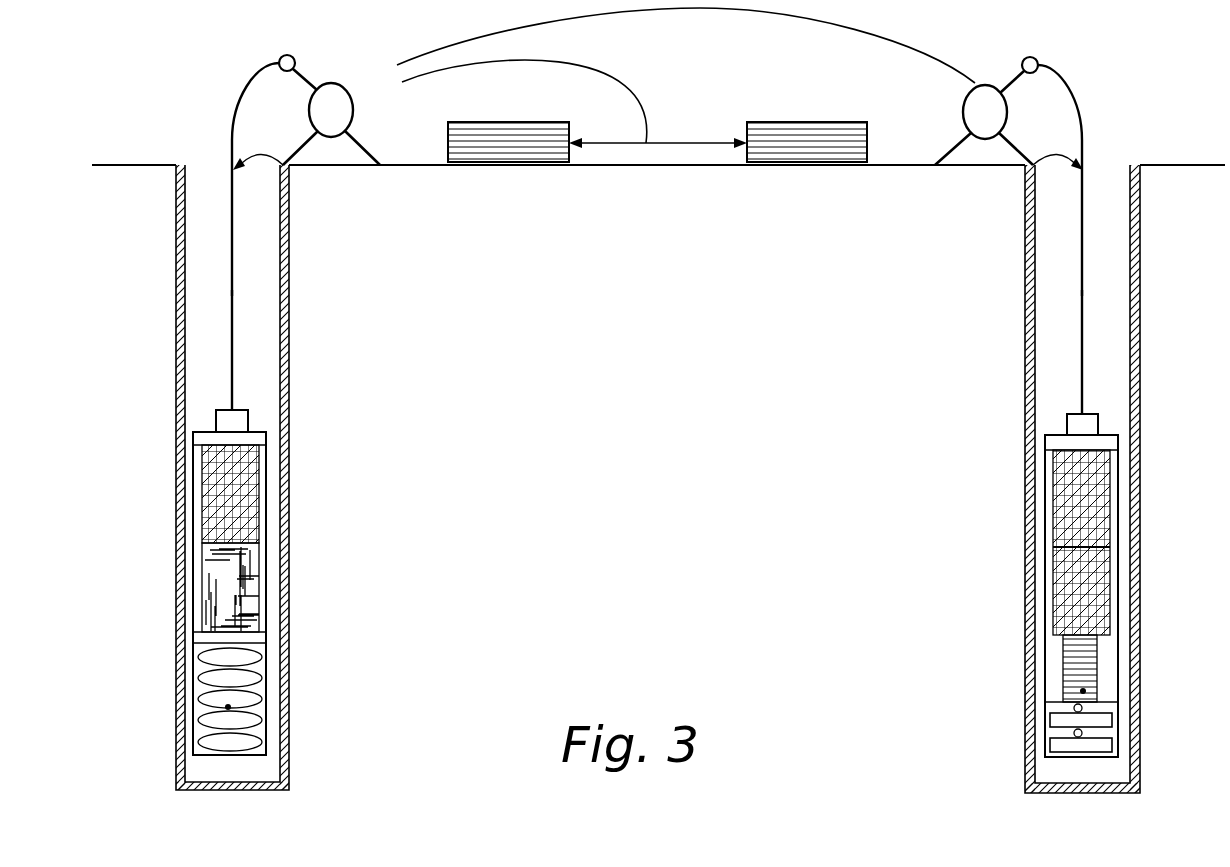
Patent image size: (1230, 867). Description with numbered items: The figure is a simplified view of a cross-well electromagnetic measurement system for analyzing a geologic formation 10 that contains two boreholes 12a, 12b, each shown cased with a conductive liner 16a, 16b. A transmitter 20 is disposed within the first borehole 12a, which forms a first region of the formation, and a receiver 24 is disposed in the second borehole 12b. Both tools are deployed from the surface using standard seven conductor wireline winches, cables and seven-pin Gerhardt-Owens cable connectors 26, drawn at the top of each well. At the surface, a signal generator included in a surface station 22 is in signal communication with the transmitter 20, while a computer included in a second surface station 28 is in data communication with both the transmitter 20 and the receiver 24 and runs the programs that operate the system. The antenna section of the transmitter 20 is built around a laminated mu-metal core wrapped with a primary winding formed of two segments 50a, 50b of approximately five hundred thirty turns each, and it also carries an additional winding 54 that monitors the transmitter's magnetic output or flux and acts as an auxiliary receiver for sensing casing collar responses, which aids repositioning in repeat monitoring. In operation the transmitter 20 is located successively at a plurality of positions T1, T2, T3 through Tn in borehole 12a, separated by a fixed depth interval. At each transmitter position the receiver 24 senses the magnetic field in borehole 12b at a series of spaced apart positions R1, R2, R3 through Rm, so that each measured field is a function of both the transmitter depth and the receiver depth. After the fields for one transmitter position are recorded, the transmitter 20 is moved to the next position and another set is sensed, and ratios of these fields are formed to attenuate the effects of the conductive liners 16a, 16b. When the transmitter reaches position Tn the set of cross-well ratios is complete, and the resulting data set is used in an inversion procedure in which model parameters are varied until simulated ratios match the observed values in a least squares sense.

The geologic formation 10 is at (667, 292).
The borehole 12a is at (226, 477).
The borehole 12b is at (1112, 479).
The conductive liner 16a is at (174, 324).
The conductive liner 16b is at (1142, 308).
The transmitter 20 is at (268, 582).
The surface station 22 is at (506, 122).
The receiver 24 is at (1106, 581).
The wireline winches, cables and cable connectors 26 is at (352, 97).
The surface station 28 is at (806, 122).
The primary winding segment 50a is at (267, 700).
The primary winding segment 50b is at (267, 746).
The additional winding 54 is at (268, 655).
The transmitter position T1 is at (284, 169).
The transmitter position T2 is at (233, 293).
The transmitter position T3 is at (247, 467).
The transmitter position Tn is at (226, 707).
The receiver position R1 is at (1032, 169).
The receiver position R2 is at (1082, 294).
The receiver position R3 is at (1078, 452).
The receiver position Rm is at (1081, 691).